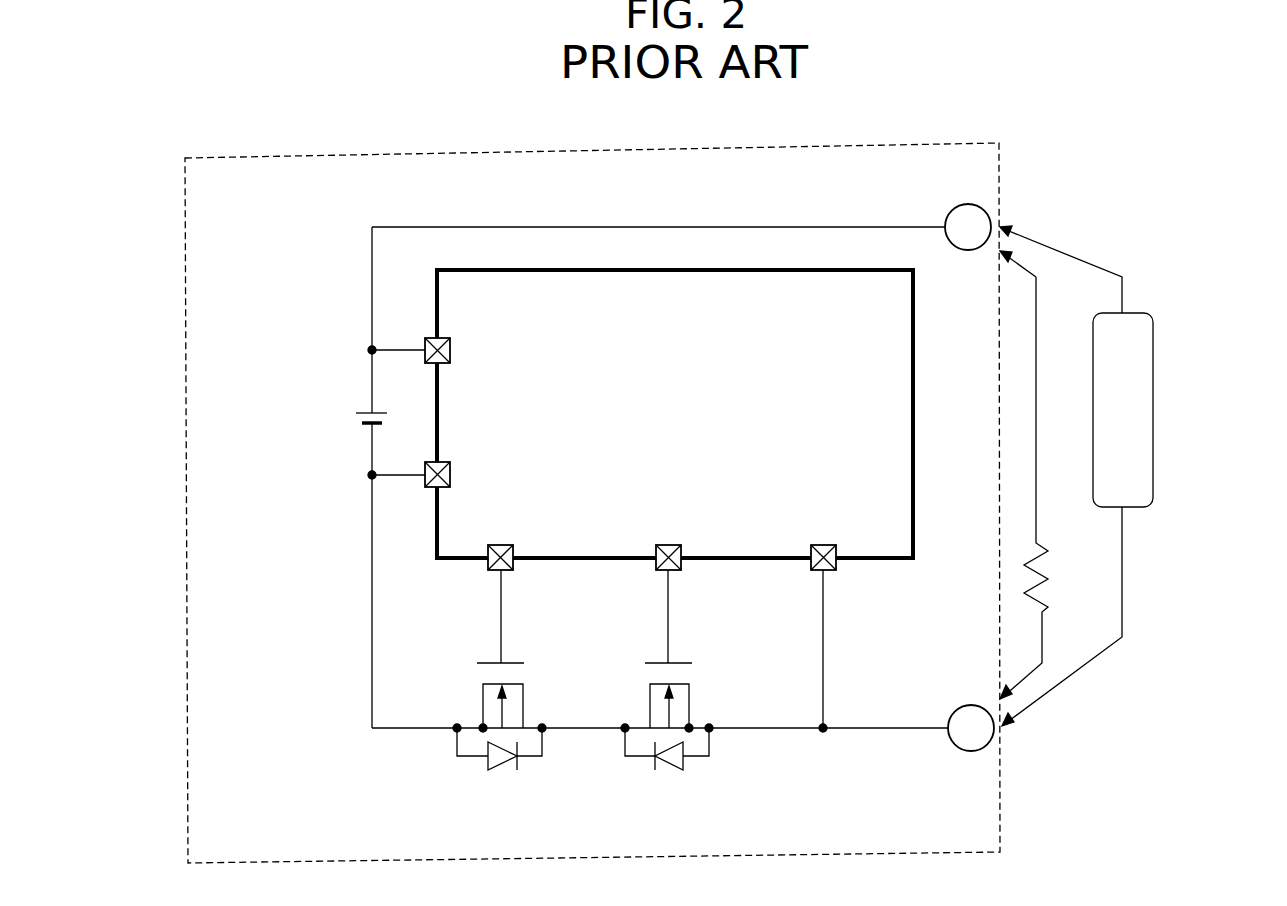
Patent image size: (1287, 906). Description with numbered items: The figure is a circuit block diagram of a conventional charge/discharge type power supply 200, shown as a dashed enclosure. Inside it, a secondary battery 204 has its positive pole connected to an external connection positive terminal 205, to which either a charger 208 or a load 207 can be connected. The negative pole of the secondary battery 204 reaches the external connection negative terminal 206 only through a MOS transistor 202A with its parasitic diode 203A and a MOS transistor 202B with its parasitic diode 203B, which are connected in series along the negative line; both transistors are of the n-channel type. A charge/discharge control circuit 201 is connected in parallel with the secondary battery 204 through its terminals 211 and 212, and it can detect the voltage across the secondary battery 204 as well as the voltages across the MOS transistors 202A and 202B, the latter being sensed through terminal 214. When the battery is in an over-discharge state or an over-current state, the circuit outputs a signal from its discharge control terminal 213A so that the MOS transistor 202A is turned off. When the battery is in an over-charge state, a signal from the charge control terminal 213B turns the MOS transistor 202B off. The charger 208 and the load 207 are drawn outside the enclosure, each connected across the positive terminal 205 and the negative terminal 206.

The charge/discharge type power supply 200 is at (425, 152).
The charge/discharge control circuit 201 is at (500, 268).
The MOS transistor 202A is at (526, 697).
The MOS transistor 202B is at (694, 696).
The parasitic diode 203A is at (500, 774).
The parasitic diode 203B is at (672, 772).
The secondary battery 204 is at (356, 420).
The external connection positive terminal 205 is at (966, 252).
The external connection negative terminal 206 is at (961, 752).
The load 207 is at (1026, 572).
The charger 208 is at (1156, 385).
The pin 211 is at (452, 348).
The pin 212 is at (452, 468).
The discharge control terminal 213A is at (503, 545).
The charge control terminal 213B is at (668, 545).
The pin 214 is at (827, 545).